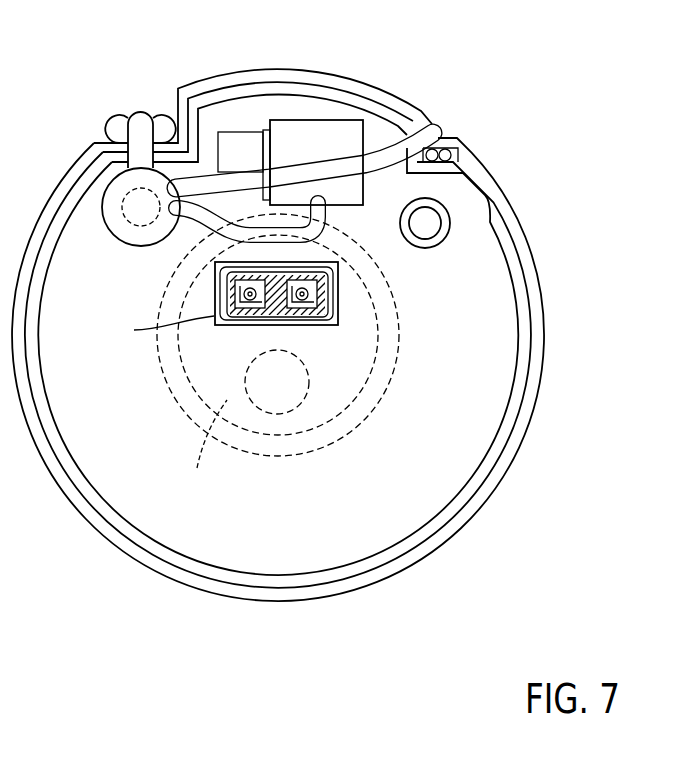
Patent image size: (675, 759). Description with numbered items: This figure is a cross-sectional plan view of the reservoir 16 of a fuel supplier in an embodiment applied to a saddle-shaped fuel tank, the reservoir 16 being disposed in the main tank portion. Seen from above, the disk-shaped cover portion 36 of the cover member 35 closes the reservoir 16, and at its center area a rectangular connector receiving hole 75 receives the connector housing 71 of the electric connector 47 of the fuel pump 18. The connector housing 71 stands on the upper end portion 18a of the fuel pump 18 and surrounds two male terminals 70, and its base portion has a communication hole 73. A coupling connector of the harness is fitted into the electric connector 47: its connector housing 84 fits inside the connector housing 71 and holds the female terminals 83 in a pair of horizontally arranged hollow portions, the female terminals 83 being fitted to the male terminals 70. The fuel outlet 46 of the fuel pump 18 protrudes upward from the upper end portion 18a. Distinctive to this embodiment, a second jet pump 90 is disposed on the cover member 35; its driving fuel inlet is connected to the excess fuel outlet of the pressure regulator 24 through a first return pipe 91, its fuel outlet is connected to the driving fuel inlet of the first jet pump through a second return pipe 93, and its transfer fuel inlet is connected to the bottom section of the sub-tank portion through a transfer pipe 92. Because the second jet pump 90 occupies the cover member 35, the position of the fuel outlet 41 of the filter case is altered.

The reservoir 16 is at (548, 287).
The fuel pump 18 is at (173, 414).
The upper end portion 18a is at (194, 448).
The pressure regulator 24 is at (311, 116).
The cover member 35 is at (496, 378).
The cover portion 36 is at (408, 413).
The fuel outlet 41 is at (446, 211).
The fuel outlet 46 is at (275, 393).
The electric connector 47 is at (345, 298).
The male terminal 70 is at (301, 310).
The connector housing 71 is at (340, 318).
The communication hole 73 is at (190, 254).
The connector receiving hole 75 is at (160, 330).
The female terminal 83 is at (315, 310).
The connector housing 84 is at (340, 277).
The second jet pump 90 is at (104, 187).
The first return pipe 91 is at (198, 205).
The transfer pipe 92 is at (141, 117).
The second return pipe 93 is at (383, 162).